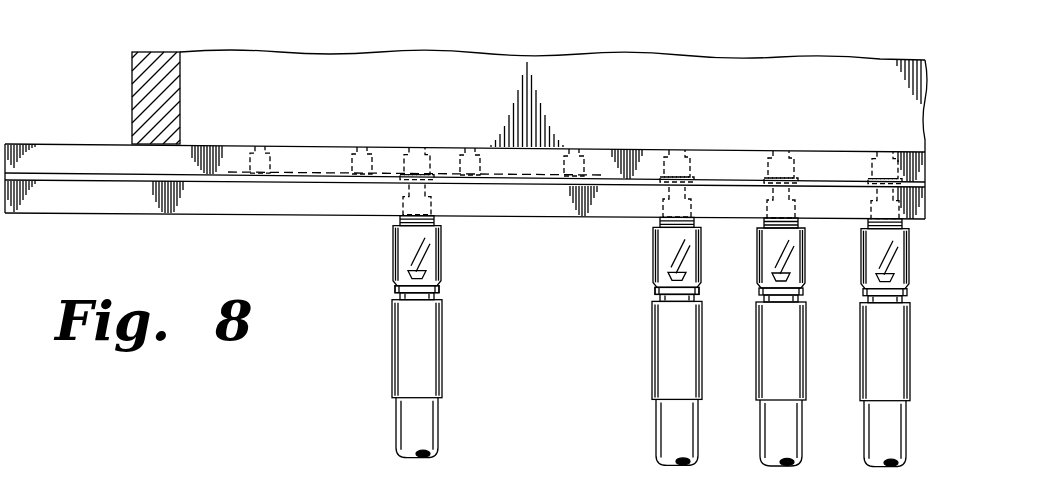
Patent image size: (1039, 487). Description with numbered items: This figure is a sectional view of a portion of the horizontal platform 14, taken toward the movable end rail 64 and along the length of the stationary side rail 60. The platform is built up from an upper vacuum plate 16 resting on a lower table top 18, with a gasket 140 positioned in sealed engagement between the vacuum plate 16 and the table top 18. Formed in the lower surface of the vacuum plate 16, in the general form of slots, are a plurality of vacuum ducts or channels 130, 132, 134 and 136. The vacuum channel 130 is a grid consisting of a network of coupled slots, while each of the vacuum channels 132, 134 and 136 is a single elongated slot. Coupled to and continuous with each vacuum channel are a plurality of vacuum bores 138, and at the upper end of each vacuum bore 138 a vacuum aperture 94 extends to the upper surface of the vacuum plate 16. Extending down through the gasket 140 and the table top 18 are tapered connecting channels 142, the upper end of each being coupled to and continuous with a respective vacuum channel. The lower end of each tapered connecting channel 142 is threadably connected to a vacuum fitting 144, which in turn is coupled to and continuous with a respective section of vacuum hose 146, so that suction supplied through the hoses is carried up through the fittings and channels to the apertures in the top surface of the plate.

The horizontal platform 14 is at (130, 218).
The vacuum plate 16 is at (535, 162).
The table top 18 is at (520, 200).
The stationary side rail 60 is at (152, 77).
The movable end rail 64 is at (487, 108).
The vacuum aperture 94 is at (260, 143).
The vacuum channel 130 is at (412, 170).
The vacuum channel 132 is at (692, 172).
The vacuum channel 134 is at (790, 172).
The vacuum channel 136 is at (870, 173).
The vacuum bore 138 is at (352, 158).
The gasket 140 is at (226, 176).
The tapered connecting channel 142 is at (430, 200).
The vacuum fitting 144 is at (393, 288).
The vacuum hose 146 is at (438, 423).